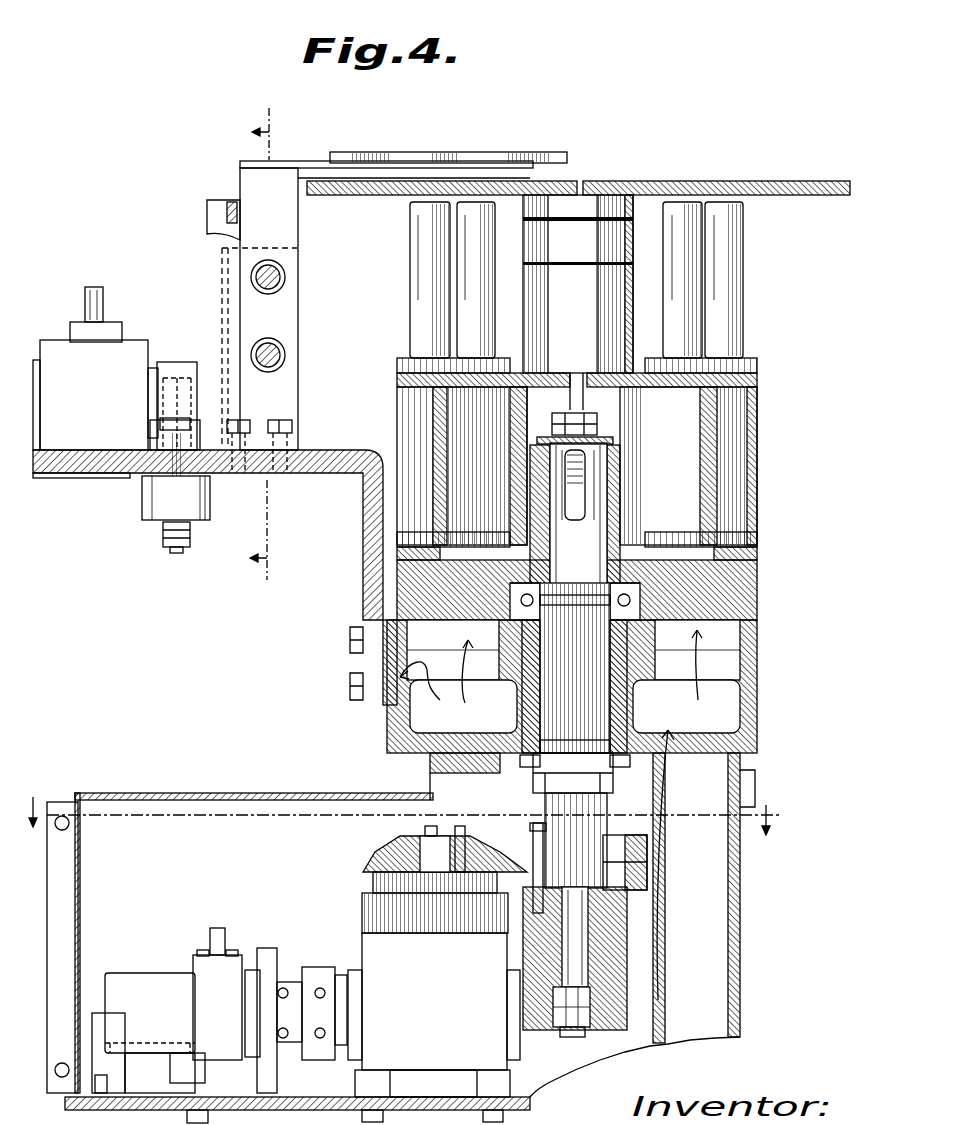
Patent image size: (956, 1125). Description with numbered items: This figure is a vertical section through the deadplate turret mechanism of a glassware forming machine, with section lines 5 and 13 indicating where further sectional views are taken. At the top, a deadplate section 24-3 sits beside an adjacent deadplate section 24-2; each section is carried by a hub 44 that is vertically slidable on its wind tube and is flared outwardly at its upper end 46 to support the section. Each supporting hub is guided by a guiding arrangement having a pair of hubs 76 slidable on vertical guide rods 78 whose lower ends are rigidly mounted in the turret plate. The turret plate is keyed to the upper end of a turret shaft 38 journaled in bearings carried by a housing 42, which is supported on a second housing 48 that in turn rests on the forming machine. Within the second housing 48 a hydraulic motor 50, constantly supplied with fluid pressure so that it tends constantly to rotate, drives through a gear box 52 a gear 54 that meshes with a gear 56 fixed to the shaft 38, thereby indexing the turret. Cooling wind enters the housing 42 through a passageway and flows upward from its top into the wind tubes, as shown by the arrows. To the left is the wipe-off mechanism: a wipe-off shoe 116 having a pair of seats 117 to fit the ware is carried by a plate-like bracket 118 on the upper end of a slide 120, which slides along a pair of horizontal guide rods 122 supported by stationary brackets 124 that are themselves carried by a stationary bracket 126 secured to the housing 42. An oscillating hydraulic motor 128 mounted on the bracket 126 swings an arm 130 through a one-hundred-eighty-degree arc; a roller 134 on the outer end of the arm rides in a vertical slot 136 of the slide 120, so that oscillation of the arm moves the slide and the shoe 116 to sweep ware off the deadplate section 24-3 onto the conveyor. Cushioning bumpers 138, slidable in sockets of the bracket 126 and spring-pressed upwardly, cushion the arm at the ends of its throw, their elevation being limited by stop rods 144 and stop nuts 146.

The section line 5- 5 is at (272, 344).
The section line 13- 13 is at (403, 803).
The table plate section 24-2 is at (745, 166).
The deadplate section 24-3 is at (357, 196).
The turret shaft 38 is at (572, 725).
The housing 42 is at (551, 668).
The hub 44 is at (578, 284).
The flared upper end of hub 46 is at (610, 233).
The second housing 48 is at (361, 820).
The hydraulic motor 50 is at (140, 978).
The gear box 52 is at (434, 997).
The gear 54 is at (462, 862).
The gear 56 is at (648, 872).
The hubs 76 is at (418, 403).
The vertical guide rods 78 is at (448, 264).
The wipe-off shoe 116 is at (337, 157).
The seats 117 is at (472, 155).
The plate-like bracket 118 is at (306, 163).
The slide 120 is at (300, 310).
The horizontal guide rods 122 is at (266, 343).
The stationary brackets 124 is at (286, 420).
The stationary bracket 126 is at (336, 458).
The oscillating hydraulic motor 128 is at (95, 368).
The arm 130 is at (178, 378).
The roller 134 is at (212, 455).
The vertical slot 136 is at (212, 228).
The cushioning bumpers 138 is at (158, 440).
The stop rods 144 is at (170, 550).
The stop nuts 146 is at (162, 536).